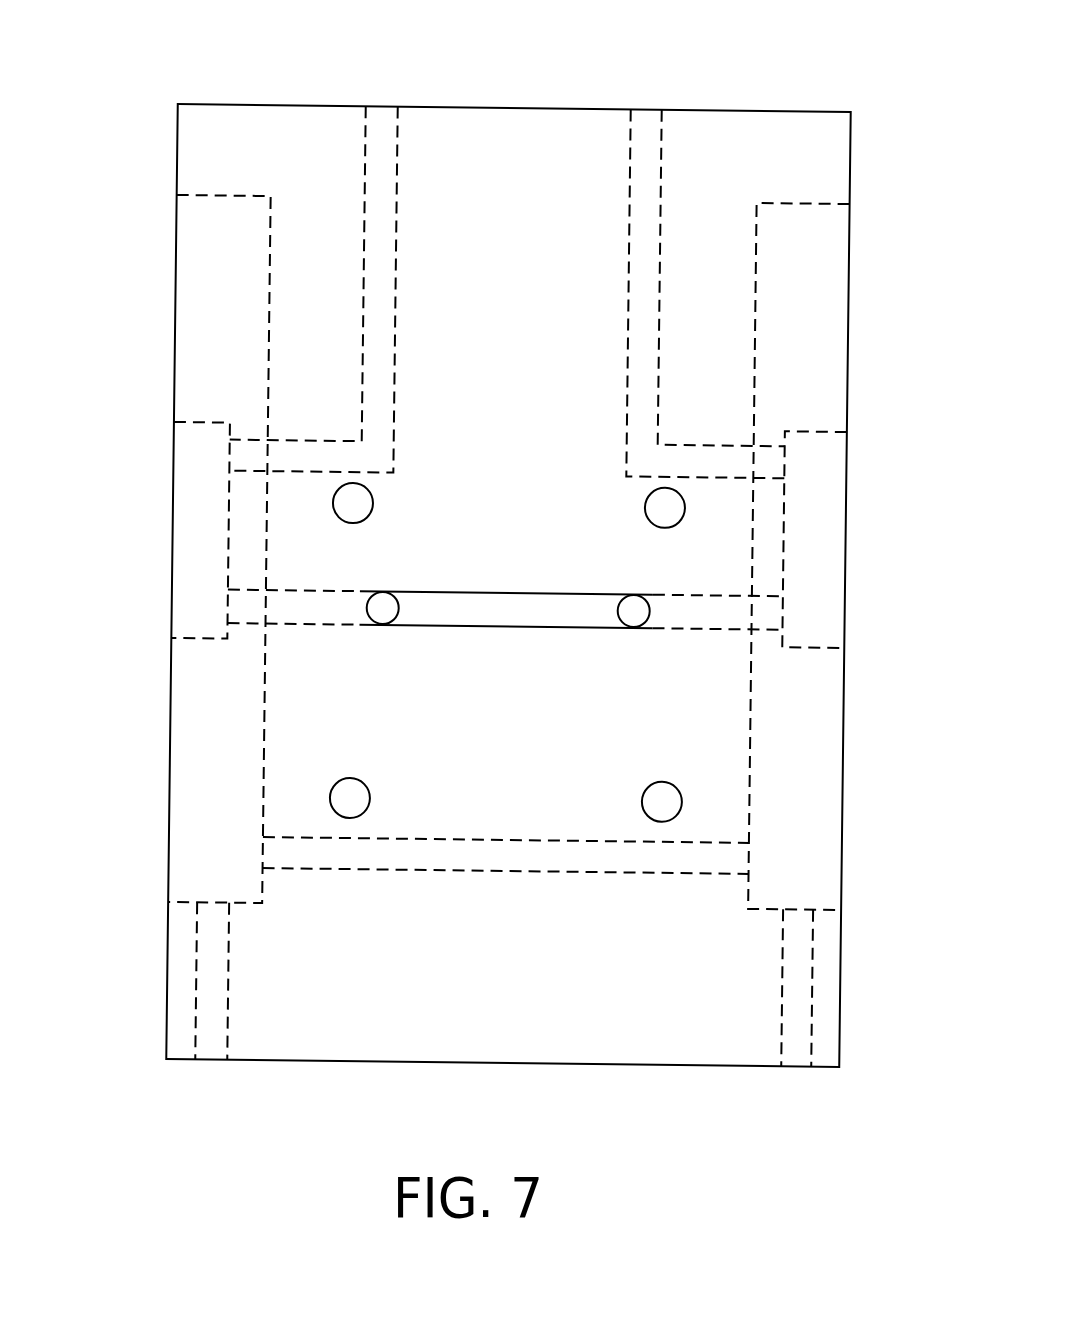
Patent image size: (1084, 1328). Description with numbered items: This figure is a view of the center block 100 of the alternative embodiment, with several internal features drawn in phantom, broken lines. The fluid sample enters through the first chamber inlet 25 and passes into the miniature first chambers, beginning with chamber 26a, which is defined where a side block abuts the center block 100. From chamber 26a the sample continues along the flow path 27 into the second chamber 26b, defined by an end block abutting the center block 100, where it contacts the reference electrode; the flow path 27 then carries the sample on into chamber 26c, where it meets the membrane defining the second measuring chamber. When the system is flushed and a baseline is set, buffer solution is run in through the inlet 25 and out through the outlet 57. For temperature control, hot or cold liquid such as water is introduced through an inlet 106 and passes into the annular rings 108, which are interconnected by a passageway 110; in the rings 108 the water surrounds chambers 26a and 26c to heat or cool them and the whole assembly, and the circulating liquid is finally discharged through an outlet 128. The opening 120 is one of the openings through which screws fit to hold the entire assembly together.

The center block 100 is at (567, 106).
The outlet 57 is at (374, 130).
The first chamber inlet 25 is at (643, 136).
The flow path 27 is at (372, 197).
The annular rings 108 is at (218, 278).
The first chamber 26a is at (817, 461).
The second chamber 26b is at (610, 576).
The first chamber 26c is at (202, 532).
The opening 120 is at (666, 509).
The passageway 110 is at (543, 857).
The outlet 128 is at (212, 1037).
The inlet 106 is at (798, 1004).